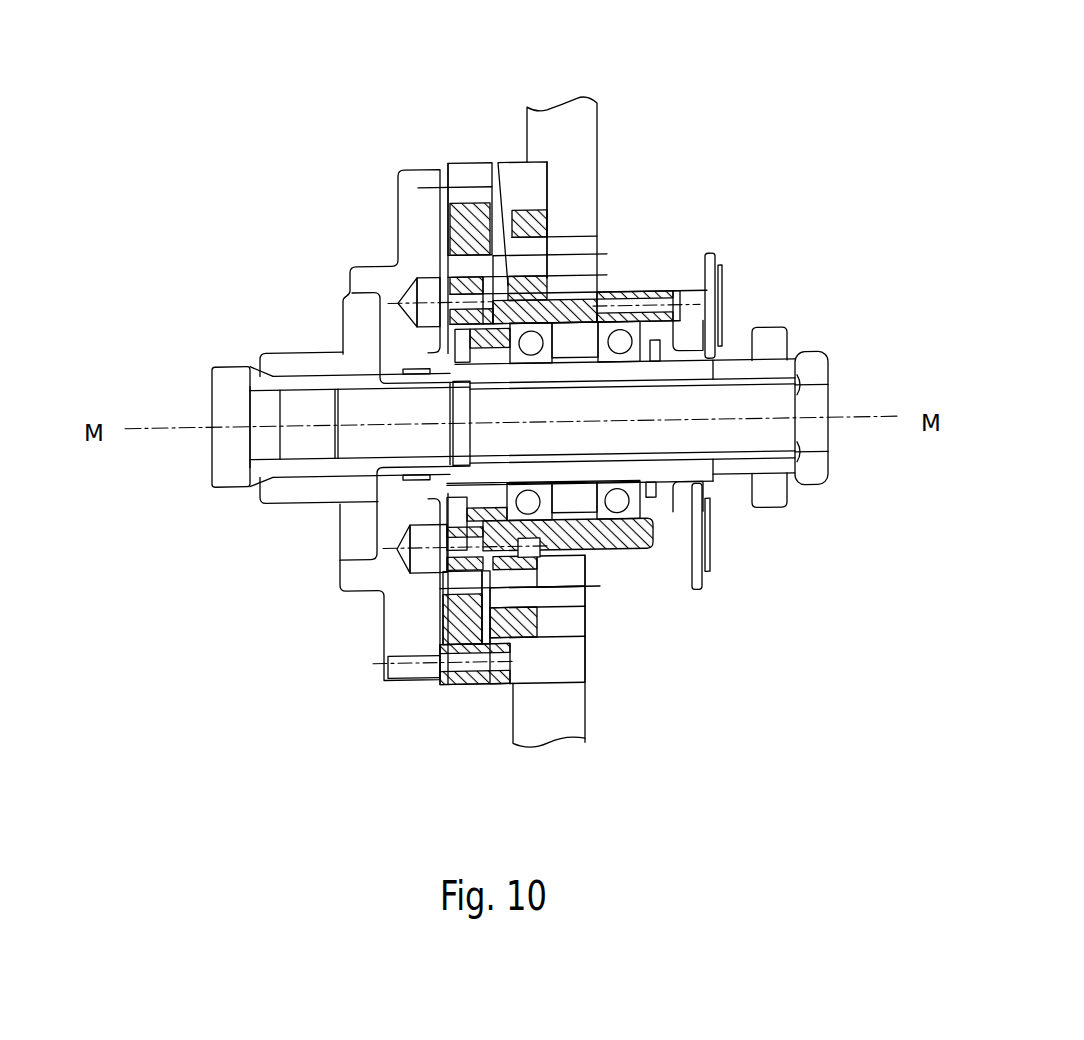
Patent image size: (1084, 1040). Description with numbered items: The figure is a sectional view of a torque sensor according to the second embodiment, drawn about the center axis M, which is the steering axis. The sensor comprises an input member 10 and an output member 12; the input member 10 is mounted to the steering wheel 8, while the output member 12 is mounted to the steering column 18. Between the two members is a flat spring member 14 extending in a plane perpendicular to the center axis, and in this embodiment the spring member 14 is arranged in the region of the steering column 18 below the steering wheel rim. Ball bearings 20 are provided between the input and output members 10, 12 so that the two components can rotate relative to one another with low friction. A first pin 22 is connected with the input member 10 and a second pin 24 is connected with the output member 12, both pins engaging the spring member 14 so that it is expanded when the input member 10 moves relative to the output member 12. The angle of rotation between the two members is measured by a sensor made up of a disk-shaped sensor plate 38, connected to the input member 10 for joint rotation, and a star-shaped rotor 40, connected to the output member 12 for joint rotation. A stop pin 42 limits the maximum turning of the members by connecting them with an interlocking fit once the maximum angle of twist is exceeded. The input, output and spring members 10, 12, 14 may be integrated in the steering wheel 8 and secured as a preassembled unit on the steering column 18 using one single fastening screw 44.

The steering wheel 8 is at (588, 126).
The input member 10 is at (533, 640).
The output member 12 is at (343, 535).
The spring member 14 is at (447, 197).
The steering column 18 is at (218, 376).
The ball bearings 20 is at (528, 507).
The first pin 22 is at (450, 687).
The second pin 24 is at (445, 574).
The sensor plate 38 is at (707, 268).
The rotor 40 is at (721, 308).
The stop pin 42 is at (508, 167).
The fastening screw 44 is at (808, 373).